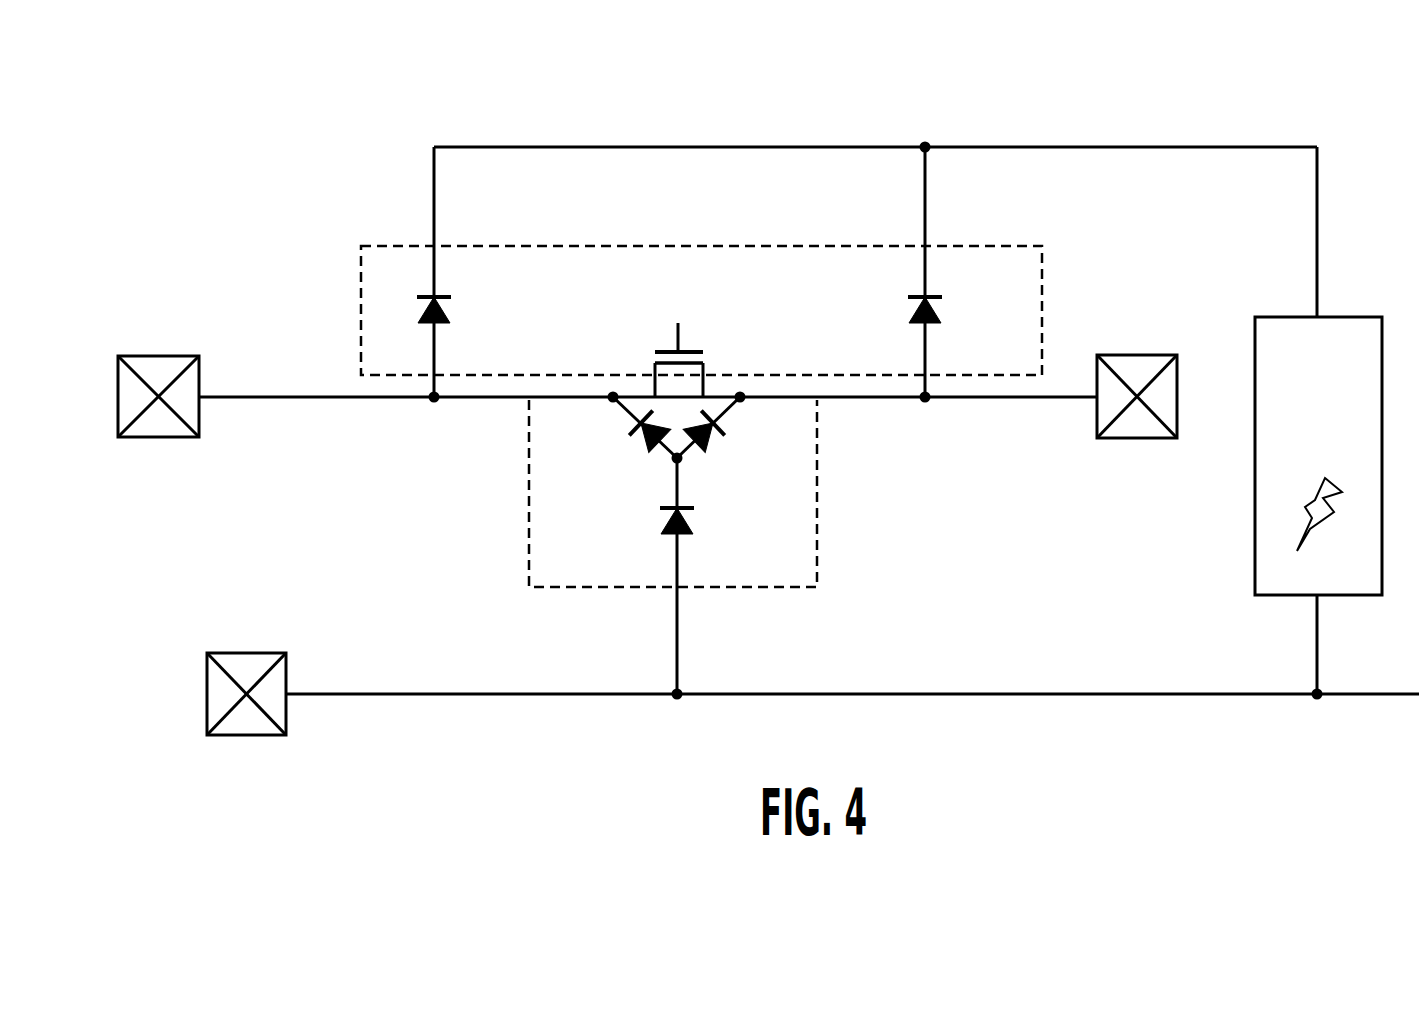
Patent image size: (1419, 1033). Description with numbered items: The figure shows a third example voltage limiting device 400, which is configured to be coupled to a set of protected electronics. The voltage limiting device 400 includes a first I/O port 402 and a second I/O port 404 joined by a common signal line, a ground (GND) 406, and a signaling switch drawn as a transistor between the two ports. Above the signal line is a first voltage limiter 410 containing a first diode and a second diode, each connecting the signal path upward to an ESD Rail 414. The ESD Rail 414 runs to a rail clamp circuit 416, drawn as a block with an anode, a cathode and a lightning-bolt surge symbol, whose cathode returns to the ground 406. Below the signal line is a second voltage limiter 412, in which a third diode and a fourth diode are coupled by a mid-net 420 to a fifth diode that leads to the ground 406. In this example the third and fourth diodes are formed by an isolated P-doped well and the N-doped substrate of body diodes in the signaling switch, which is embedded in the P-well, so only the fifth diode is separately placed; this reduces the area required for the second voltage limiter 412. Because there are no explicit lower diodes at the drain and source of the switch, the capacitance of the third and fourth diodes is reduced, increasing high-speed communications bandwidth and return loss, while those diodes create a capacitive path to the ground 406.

The voltage limiting device 400 is at (163, 160).
The first I/O port 402 is at (158, 440).
The second I/O port 404 is at (1132, 441).
The ground (GND) 406 is at (207, 688).
The first voltage limiter 410 is at (549, 246).
The second voltage limiter 412 is at (817, 490).
The ESD Rail 414 is at (1015, 147).
The rail clamp circuit 416 is at (1255, 548).
The mid-net 420 is at (668, 463).